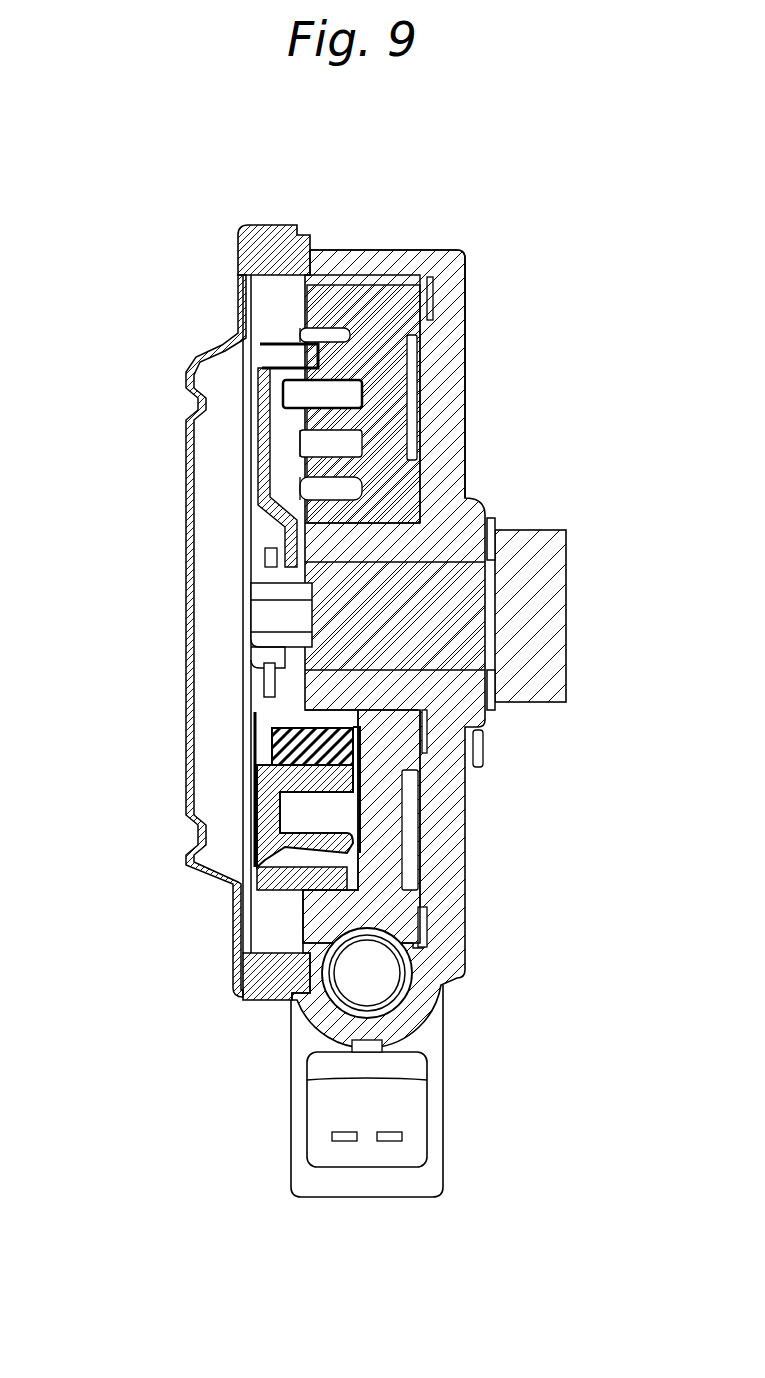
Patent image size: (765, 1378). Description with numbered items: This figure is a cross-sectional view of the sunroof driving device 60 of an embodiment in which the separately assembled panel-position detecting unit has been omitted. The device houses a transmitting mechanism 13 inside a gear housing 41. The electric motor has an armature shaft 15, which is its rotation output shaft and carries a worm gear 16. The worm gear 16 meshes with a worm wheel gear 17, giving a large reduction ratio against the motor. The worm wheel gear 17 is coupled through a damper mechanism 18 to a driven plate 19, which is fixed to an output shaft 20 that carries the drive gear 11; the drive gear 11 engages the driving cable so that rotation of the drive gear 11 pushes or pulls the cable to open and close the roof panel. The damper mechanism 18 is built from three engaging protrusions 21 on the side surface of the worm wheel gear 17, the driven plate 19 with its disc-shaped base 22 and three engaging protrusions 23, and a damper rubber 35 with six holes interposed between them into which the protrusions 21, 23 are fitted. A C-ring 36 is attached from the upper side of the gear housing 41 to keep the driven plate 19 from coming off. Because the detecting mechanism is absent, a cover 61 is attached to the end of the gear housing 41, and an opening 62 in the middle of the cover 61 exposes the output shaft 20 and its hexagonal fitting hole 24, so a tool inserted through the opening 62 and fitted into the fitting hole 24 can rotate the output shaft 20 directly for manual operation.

The drive gear 11 is at (545, 528).
The transmitting mechanism 13 is at (284, 330).
The armature shaft 15 is at (380, 973).
The worm gear 16 is at (295, 1008).
The worm wheel gear 17 is at (396, 907).
The damper mechanism 18 is at (348, 390).
The driven plate 19 is at (266, 395).
The output shaft 20 is at (558, 627).
The engaging protrusions 21 is at (344, 380).
The disc-shaped base 22 is at (268, 460).
The engaging protrusion 23 is at (278, 822).
The fitting hole 24 is at (258, 612).
The damper rubber 35 is at (350, 748).
The C-ring 36 is at (265, 690).
The gear housing 41 is at (448, 378).
The driving device 60 is at (432, 243).
The cover 61 is at (246, 266).
The opening 62 is at (182, 550).